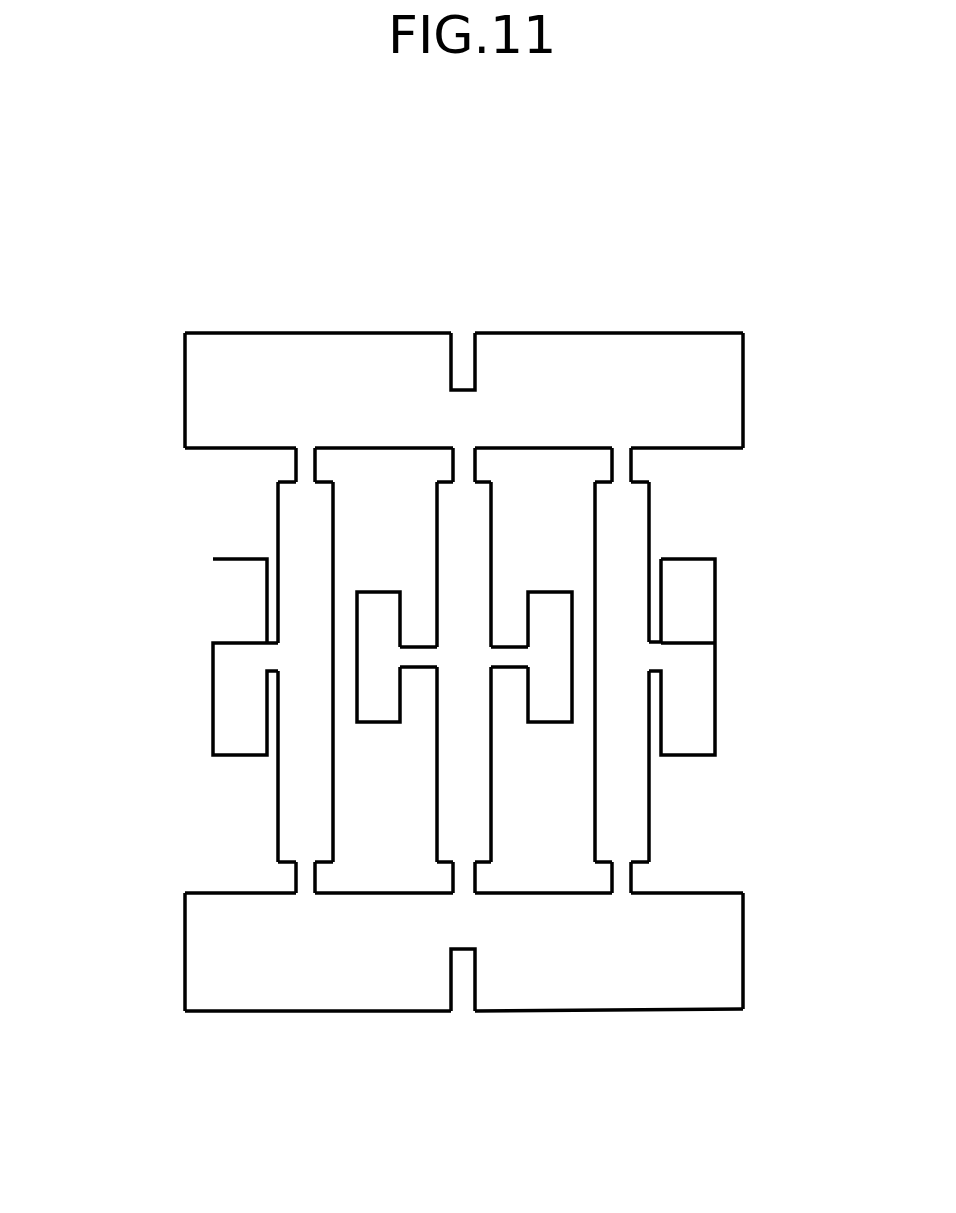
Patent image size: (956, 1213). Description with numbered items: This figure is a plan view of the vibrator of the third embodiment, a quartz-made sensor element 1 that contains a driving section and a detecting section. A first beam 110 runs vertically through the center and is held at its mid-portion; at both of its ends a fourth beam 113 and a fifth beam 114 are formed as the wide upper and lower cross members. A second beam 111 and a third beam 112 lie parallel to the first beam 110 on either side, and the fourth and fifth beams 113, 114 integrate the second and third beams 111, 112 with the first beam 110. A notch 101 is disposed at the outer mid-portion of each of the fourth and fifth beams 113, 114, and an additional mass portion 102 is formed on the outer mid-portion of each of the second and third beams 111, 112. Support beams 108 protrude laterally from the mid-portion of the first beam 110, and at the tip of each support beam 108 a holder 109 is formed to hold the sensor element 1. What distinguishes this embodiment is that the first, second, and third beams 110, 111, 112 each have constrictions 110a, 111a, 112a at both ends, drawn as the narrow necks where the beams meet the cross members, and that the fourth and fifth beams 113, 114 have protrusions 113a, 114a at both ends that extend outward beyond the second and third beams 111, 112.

The sensor element 1 is at (465, 687).
The notch 101 is at (460, 357).
The additional mass portion 102 is at (233, 655).
The support beam 108 is at (334, 743).
The holder 109 is at (372, 662).
The first beam 110 is at (472, 588).
The constriction 110a is at (462, 468).
The second beam 111 is at (300, 555).
The constriction 111a is at (305, 473).
The third beam 112 is at (622, 797).
The constriction 112a is at (622, 469).
The fourth beam 113 is at (621, 362).
The protrusion 113a is at (233, 385).
The fifth beam 114 is at (326, 983).
The protrusion 114a is at (222, 967).